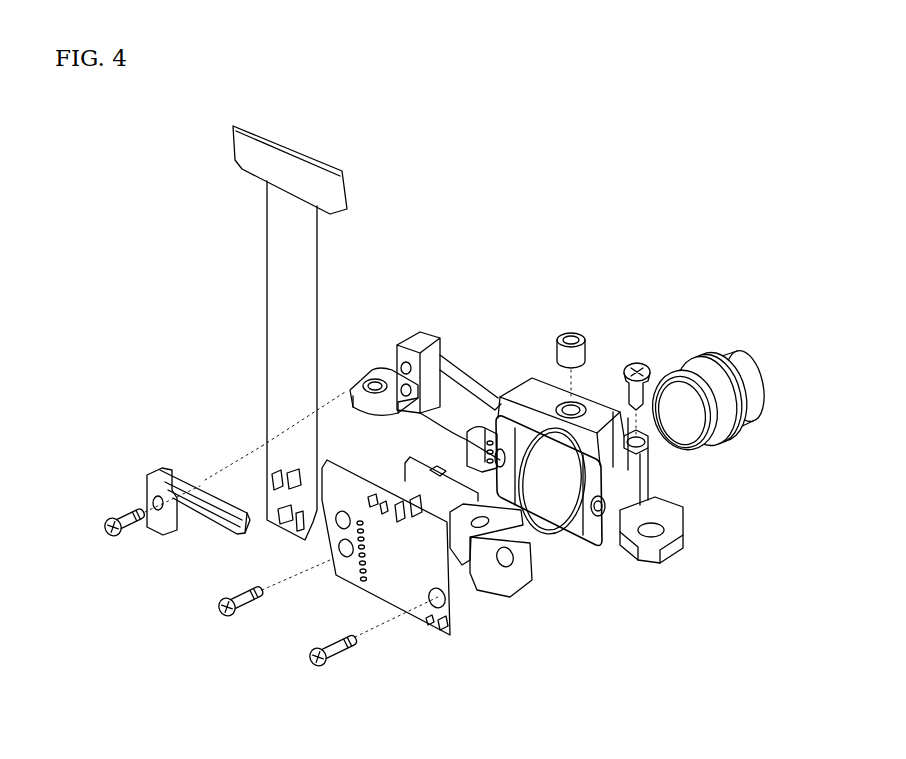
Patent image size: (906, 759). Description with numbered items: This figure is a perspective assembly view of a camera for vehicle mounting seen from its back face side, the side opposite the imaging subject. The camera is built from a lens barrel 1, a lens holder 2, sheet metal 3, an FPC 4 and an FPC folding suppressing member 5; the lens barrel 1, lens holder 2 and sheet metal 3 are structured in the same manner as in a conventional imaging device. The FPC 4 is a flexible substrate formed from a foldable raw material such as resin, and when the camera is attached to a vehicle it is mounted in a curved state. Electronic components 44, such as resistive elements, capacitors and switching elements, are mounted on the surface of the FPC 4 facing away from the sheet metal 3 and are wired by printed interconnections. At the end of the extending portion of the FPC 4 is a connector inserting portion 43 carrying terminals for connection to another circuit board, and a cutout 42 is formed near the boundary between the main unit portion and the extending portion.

The lens barrel 1 is at (710, 370).
The lens holder 2 is at (653, 485).
The sheet metal 3 is at (517, 580).
The FPC 4 is at (282, 290).
The FPC folding suppressing member 5 is at (198, 488).
The cutout 42 is at (317, 556).
The connector inserting portion 43 is at (276, 163).
The electronic components 44 is at (435, 626).